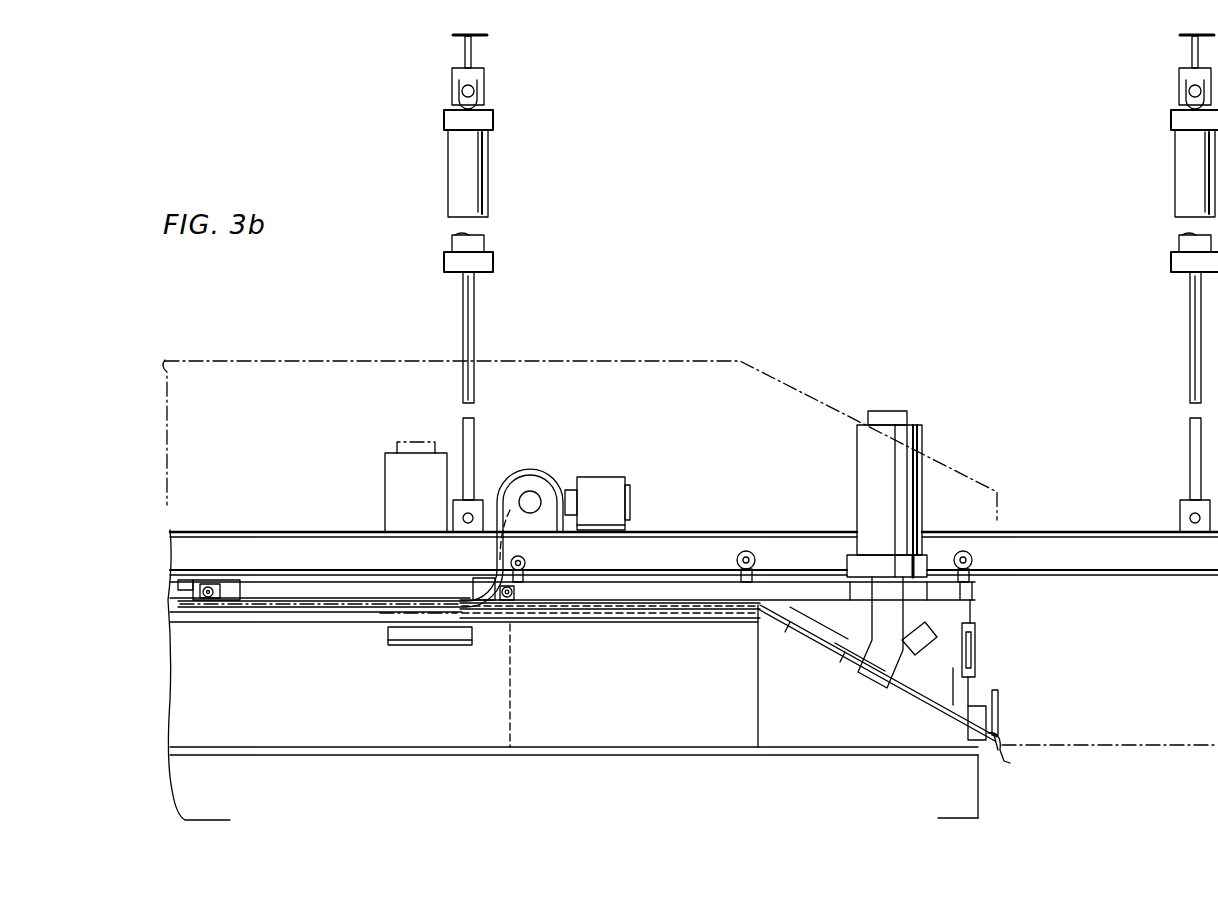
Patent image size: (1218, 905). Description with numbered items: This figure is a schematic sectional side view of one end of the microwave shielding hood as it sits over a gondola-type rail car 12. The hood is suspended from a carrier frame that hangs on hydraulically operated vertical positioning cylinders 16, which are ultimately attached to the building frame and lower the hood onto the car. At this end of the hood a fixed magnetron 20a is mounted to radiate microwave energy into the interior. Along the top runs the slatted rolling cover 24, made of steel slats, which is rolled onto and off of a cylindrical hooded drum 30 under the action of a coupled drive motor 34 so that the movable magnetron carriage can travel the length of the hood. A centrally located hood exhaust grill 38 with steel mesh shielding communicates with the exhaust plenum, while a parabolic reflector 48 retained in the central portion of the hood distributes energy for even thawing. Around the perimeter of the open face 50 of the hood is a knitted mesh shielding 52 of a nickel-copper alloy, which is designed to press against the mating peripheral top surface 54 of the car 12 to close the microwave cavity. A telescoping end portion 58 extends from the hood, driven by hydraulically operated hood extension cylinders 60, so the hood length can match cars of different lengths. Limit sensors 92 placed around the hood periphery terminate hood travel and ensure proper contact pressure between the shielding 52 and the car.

The gondola-type rail car 12 is at (982, 778).
The vertical positioning cylinders 16 is at (489, 150).
The fixed magnetron 20a is at (922, 430).
The slatted rolling cover 24 is at (292, 600).
The hooded drum 30 is at (535, 472).
The drive motor 34 is at (612, 477).
The hood exhaust grill 38 is at (395, 646).
The parabolic reflector 48 is at (655, 618).
The open face 50 is at (1006, 742).
The knitted mesh shielding 52 is at (968, 740).
The peripheral top surface 54 is at (670, 745).
The telescoping end portion 58 is at (906, 692).
The hood extension cylinders 60 is at (344, 590).
The limit sensors 92 is at (953, 682).